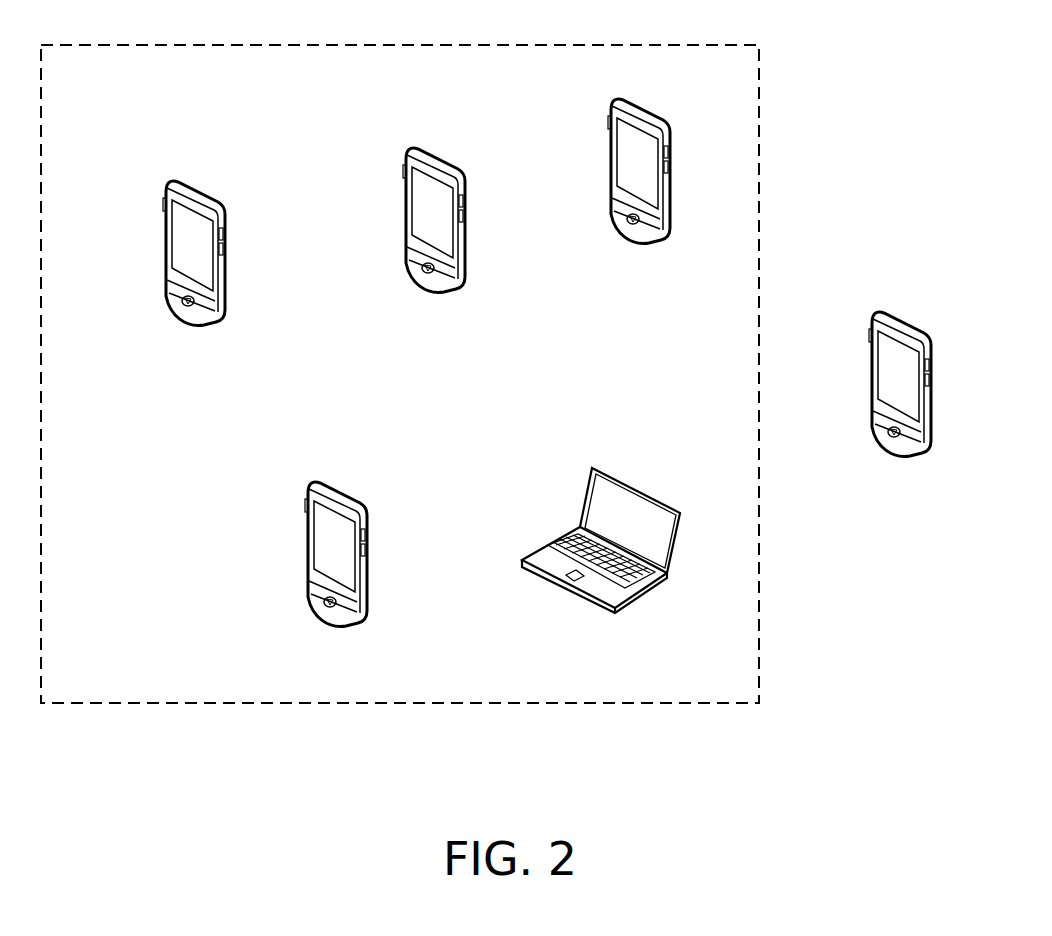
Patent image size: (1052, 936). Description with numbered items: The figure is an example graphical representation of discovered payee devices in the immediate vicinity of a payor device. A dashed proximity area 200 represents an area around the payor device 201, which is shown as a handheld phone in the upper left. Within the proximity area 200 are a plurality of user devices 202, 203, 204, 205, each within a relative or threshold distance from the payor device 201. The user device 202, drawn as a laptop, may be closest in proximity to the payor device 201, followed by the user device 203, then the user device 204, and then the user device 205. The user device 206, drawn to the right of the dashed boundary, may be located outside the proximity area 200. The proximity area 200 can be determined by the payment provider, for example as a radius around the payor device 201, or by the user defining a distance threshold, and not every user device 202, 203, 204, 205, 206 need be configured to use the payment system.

The proximity area 200 is at (132, 44).
The payor device 201 is at (193, 168).
The user device 202 is at (562, 505).
The user device 203 is at (600, 126).
The user device 204 is at (320, 462).
The user device 205 is at (409, 130).
The user device 206 is at (895, 300).